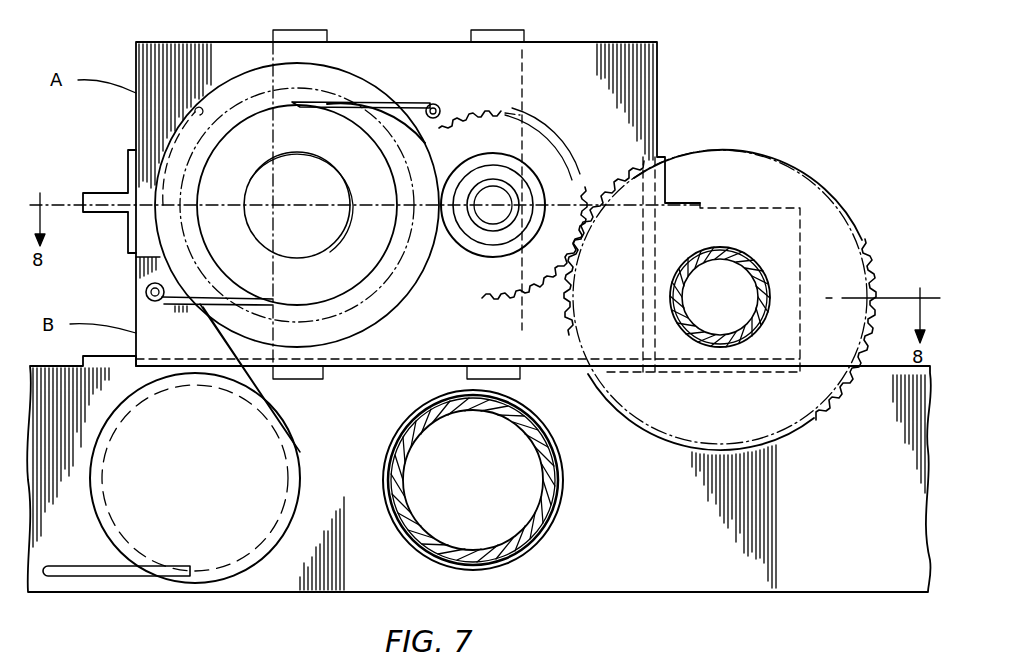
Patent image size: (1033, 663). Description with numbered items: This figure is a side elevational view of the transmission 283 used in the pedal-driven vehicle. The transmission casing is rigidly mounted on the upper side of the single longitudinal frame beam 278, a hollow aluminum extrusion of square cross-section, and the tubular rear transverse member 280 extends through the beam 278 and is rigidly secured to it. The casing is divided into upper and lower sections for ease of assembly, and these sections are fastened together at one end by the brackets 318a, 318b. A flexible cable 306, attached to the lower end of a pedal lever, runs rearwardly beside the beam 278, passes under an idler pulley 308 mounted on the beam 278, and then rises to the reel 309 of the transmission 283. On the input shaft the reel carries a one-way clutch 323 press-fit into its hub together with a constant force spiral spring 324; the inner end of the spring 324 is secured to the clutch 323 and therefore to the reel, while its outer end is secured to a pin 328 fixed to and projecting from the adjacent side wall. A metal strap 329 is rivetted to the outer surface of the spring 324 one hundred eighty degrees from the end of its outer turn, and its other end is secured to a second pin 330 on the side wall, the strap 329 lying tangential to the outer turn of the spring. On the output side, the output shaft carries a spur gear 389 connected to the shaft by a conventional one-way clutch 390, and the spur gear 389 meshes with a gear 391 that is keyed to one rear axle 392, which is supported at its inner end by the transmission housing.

The longitudinal beam 278 is at (783, 586).
The rear transverse member 280 is at (540, 522).
The transmission 283 is at (626, 44).
The flexible cable 306 is at (120, 577).
The idler pulley 308 is at (90, 485).
The reel 309 is at (205, 97).
The bracket 318a is at (102, 193).
The bracket 318b is at (112, 212).
The one-way clutch 323 is at (298, 220).
The constant force spiral spring 324 is at (347, 293).
The pin 328 is at (146, 292).
The metal strap 329 is at (366, 107).
The pin 330 is at (438, 105).
The spur gear 389 is at (535, 128).
The one-way clutch 390 is at (532, 168).
The gear 391 is at (765, 144).
The rear axle 392 is at (770, 288).